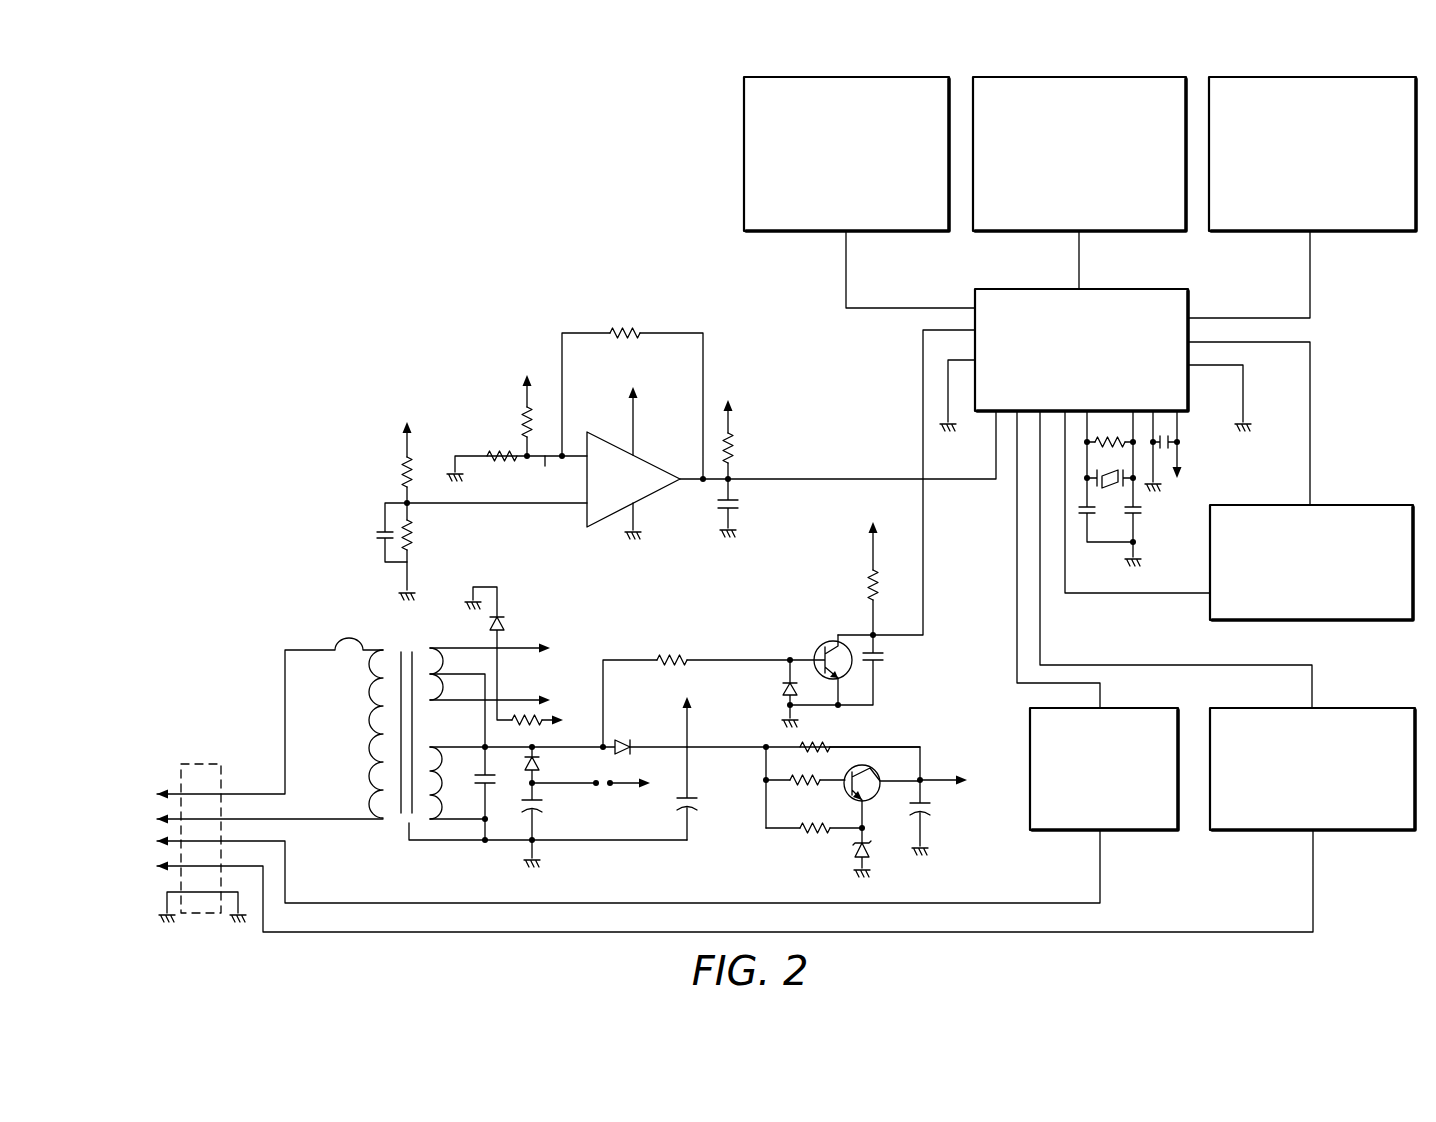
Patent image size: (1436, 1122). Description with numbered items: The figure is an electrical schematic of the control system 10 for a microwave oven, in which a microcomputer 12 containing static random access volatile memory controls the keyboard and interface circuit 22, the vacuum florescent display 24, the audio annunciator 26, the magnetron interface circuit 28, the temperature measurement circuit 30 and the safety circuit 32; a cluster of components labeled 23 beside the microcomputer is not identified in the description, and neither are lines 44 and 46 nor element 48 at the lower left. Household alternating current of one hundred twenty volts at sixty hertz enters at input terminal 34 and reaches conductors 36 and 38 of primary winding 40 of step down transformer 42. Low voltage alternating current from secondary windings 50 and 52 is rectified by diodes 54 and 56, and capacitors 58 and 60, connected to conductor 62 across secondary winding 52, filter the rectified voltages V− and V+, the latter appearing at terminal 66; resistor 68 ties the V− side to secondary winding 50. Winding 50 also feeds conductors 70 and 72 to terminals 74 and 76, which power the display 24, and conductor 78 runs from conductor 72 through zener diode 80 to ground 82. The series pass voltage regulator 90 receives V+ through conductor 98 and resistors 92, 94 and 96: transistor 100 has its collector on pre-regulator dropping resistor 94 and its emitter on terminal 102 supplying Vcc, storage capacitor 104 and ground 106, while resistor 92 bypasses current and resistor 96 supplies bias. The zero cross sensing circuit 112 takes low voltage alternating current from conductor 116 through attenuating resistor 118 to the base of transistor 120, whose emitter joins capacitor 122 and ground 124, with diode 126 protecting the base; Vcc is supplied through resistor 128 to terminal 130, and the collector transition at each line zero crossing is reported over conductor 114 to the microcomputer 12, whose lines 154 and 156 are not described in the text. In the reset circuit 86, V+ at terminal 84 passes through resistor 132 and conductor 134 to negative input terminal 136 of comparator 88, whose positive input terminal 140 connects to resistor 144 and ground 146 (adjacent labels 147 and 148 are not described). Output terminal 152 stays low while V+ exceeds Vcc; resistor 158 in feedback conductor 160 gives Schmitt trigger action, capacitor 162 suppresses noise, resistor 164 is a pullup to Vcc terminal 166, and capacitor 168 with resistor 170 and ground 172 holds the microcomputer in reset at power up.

The control system 10 is at (550, 260).
The microcomputer 12 is at (998, 289).
The keyboard and interface circuit 22 is at (842, 77).
The clock crystal circuit 23 is at (1160, 518).
The vacuum florescent display 24 is at (1052, 77).
The audio annunciator 26 is at (1305, 77).
The magnetron interface circuit 28 is at (1383, 505).
The temperature measurement circuit 30 is at (1377, 708).
The safety circuit 32 is at (1150, 832).
The input terminal 34 is at (140, 722).
The conductor 36 is at (178, 793).
The conductor 38 is at (286, 815).
The primary winding 40 is at (383, 820).
The step down transformer 42 is at (380, 637).
The door switch line 44 is at (288, 850).
The probe line 46 is at (308, 933).
The ground connection 48 is at (167, 905).
The secondary winding 50 is at (425, 648).
The secondary winding 52 is at (432, 812).
The diode 54 is at (541, 762).
The diode 56 is at (626, 741).
The capacitor 58 is at (545, 822).
The capacitor 60 is at (685, 808).
The conductor 62 is at (594, 843).
The terminal 66 is at (695, 714).
The resistor 68 is at (548, 730).
The conductor 70 is at (517, 644).
The conductor 72 is at (515, 697).
The terminal 74 is at (542, 646).
The terminal 76 is at (546, 702).
The conductor 78 is at (498, 660).
The zener diode 80 is at (500, 617).
The ground 82 is at (467, 603).
The terminal 84 is at (400, 437).
The reset circuit 86 is at (467, 395).
The voltage comparator 88 is at (600, 527).
The series pass voltage regulator 90 is at (778, 845).
The resistor 92 is at (826, 746).
The resistor 94 is at (804, 787).
The resistor 96 is at (815, 812).
The conductor 98 is at (728, 750).
The transistor 100 is at (877, 801).
The terminal 102 is at (952, 778).
The voltage storage capacitor 104 is at (932, 806).
The ground 106 is at (931, 848).
The zero cross sensing circuit 112 is at (806, 606).
The conductor 114 is at (923, 520).
The conductor 116 is at (605, 665).
The resistor 118 is at (680, 660).
The transistor 120 is at (825, 649).
The capacitor 122 is at (878, 668).
The ground 124 is at (765, 722).
The diode 126 is at (781, 691).
The resistor 128 is at (878, 585).
The terminal 130 is at (868, 538).
The resistor 132 is at (400, 473).
The conductor 134 is at (458, 510).
The input terminal 136 is at (583, 510).
The positive input terminal 140 is at (587, 452).
The resistor 144 is at (493, 452).
The ground 146 is at (462, 478).
The junction 147 is at (544, 472).
The resistor 148 is at (520, 384).
The output terminal 152 is at (678, 480).
The output line 154 is at (820, 478).
The microprocessor input 156 is at (990, 412).
The resistor 158 is at (636, 333).
The conductor 160 is at (705, 338).
The capacitor 162 is at (745, 501).
The resistor 164 is at (735, 446).
The terminal 166 is at (735, 413).
The capacitor 168 is at (377, 520).
The resistor 170 is at (420, 536).
The ground 172 is at (395, 595).